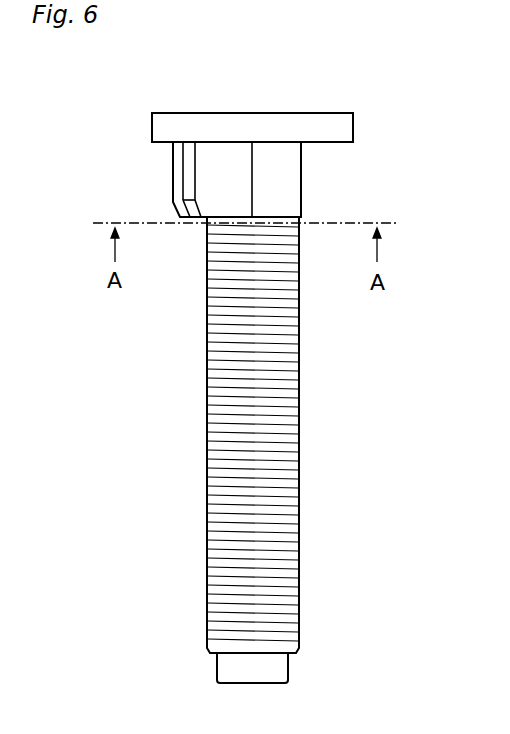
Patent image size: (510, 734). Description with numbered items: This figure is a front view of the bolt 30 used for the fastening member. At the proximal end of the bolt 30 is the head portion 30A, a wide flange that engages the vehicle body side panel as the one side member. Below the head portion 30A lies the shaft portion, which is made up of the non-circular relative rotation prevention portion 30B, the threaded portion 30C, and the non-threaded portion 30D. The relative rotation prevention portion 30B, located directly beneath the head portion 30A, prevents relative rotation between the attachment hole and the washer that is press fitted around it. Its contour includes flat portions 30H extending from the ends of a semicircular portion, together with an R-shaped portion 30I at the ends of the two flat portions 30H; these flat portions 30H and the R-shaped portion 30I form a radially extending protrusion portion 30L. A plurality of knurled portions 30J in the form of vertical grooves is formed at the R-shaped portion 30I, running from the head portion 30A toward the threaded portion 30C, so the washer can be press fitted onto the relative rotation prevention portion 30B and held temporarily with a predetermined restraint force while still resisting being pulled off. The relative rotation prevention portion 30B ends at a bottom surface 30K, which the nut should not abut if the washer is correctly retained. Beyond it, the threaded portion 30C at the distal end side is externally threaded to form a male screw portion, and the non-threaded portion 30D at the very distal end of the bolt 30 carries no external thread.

The bolt 30 is at (93, 121).
The head portion 30A is at (285, 126).
The relative rotation prevention portion 30B is at (262, 163).
The threaded portion 30C is at (252, 350).
The non-threaded portion 30D is at (255, 672).
The flat portions 30H is at (225, 197).
The R-shaped portion 30I is at (173, 200).
The knurled portions 30J is at (173, 154).
The bottom surface 30K is at (190, 224).
The protrusion portion 30L is at (173, 143).